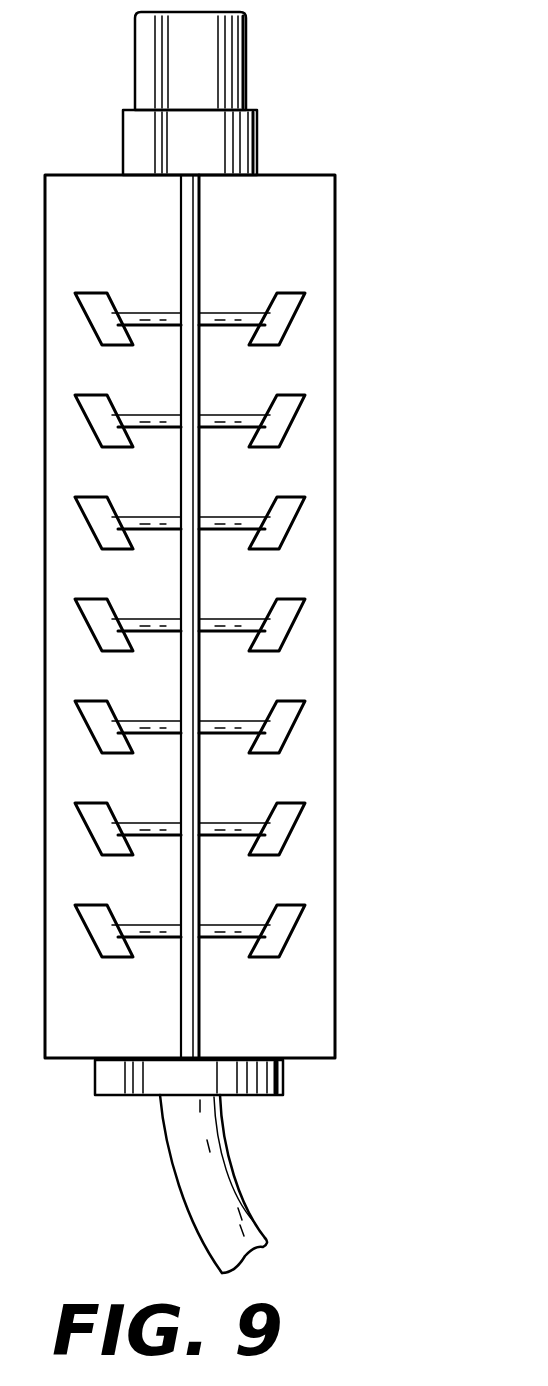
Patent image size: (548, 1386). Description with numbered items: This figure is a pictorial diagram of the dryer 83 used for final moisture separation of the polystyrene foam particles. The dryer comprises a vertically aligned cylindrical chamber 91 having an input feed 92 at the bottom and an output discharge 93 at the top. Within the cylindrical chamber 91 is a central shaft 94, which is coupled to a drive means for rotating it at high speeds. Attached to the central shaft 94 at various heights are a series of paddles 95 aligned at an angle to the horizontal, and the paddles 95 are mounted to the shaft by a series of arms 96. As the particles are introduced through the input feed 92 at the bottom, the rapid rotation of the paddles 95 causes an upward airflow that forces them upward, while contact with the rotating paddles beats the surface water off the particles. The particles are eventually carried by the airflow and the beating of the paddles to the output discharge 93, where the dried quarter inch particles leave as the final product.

The dryer 83 is at (464, 51).
The cylindrical chamber 91 is at (340, 339).
The input feed 92 is at (215, 1148).
The output discharge 93 is at (247, 79).
The central shaft 94 is at (194, 382).
The paddles 95 is at (96, 302).
The arms 96 is at (130, 325).